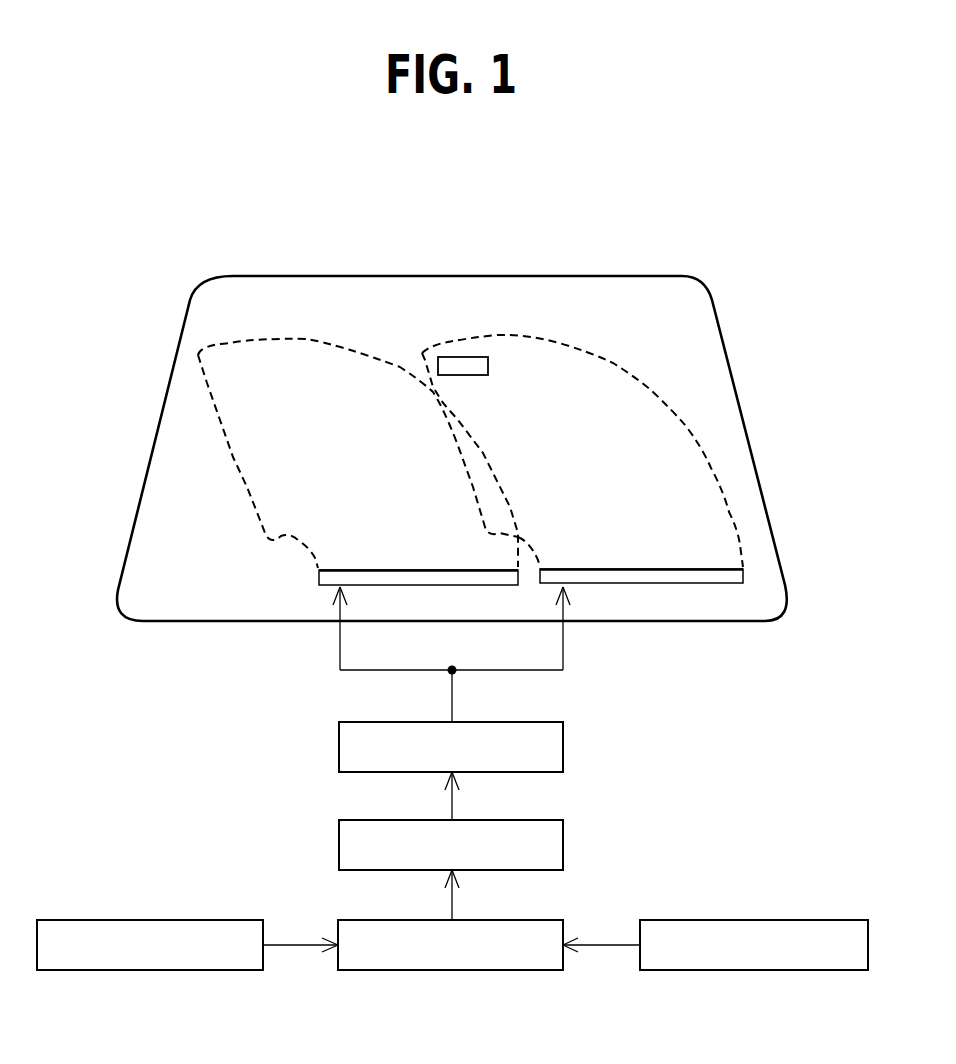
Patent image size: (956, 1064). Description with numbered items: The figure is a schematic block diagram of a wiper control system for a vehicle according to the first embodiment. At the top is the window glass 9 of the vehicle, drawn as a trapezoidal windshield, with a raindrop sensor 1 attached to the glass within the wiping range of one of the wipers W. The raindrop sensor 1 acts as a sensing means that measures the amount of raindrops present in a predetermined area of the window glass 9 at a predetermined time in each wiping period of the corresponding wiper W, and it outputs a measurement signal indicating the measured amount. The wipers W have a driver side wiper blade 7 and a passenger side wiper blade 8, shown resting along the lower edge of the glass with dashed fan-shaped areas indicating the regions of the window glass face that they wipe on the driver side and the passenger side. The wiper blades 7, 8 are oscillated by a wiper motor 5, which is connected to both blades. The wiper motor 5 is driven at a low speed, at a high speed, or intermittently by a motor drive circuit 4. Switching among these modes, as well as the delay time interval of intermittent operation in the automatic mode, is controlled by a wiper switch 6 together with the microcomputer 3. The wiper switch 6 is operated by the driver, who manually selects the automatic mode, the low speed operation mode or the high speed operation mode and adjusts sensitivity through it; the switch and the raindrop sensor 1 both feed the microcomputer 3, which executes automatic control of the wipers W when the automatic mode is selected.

The raindrop sensor 1 is at (466, 357).
The microcomputer 3 is at (542, 920).
The motor drive circuit 4 is at (563, 845).
The wiper motor 5 is at (563, 747).
The wiper switch 6 is at (202, 920).
The driver side wiper blade 7 is at (702, 583).
The passenger side wiper blade 8 is at (465, 585).
The window glass 9 is at (742, 405).
The wipers W is at (320, 637).